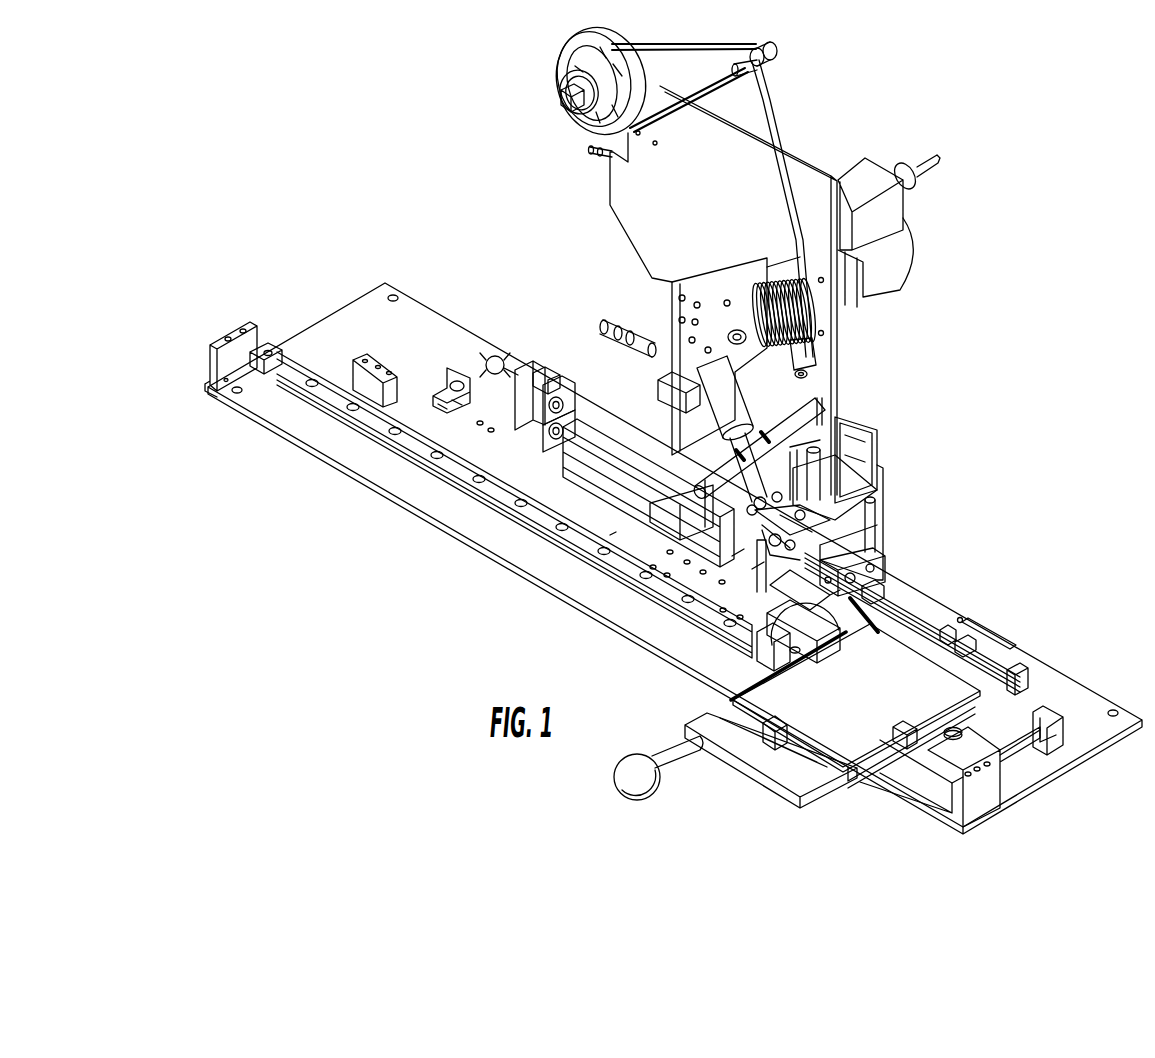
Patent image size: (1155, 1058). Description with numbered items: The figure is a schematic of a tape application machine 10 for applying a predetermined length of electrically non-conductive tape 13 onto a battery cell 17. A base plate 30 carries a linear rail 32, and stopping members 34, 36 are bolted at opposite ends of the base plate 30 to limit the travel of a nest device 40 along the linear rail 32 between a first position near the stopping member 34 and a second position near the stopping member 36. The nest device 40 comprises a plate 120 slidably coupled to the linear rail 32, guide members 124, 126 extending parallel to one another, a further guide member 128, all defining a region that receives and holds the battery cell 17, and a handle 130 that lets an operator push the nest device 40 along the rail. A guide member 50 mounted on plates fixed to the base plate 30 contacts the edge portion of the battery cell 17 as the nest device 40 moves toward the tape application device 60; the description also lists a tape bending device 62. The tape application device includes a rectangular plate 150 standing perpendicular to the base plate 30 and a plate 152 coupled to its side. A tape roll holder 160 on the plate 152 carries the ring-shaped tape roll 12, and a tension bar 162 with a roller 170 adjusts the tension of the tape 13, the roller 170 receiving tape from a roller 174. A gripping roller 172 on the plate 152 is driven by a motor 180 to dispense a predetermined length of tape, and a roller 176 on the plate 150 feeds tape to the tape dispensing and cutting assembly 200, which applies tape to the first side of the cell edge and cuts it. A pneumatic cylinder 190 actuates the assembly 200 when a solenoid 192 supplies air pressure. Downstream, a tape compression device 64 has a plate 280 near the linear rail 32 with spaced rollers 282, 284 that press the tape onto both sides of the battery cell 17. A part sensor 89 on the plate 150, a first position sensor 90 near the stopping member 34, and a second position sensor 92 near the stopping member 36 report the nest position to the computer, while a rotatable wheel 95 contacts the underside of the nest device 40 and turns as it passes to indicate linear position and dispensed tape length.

The tape application machine 10 is at (948, 143).
The tape roll 12 is at (582, 78).
The electrically non-conductive tape 13 is at (780, 118).
The battery cell 17 is at (846, 701).
The base plate 30 is at (1073, 677).
The linear rail 32 is at (592, 562).
The stopping member 34 is at (987, 794).
The stopping member 36 is at (215, 352).
The nest device 40 is at (270, 352).
The guide member 50 is at (1010, 678).
The tape application device 60 is at (815, 160).
The tape bending device 62 is at (610, 442).
The tape compression device 64 is at (552, 388).
The part sensor 89 is at (807, 478).
The first position sensor 90 is at (880, 567).
The second position sensor 92 is at (457, 373).
The rotatable wheel 95 is at (873, 593).
The plate 120 is at (930, 777).
The guide member 124 is at (903, 730).
The guide member 126 is at (773, 633).
The guide member 128 is at (723, 712).
The handle 130 is at (647, 793).
The plate 150 is at (680, 305).
The plate 152 is at (625, 214).
The tape roll holder 160 is at (572, 72).
The tension bar 162 is at (685, 50).
The roller 170 is at (760, 48).
The gripping roller 172 is at (775, 316).
The roller 174 is at (805, 374).
The roller 176 is at (795, 423).
The motor 180 is at (913, 254).
The pneumatic cylinder 190 is at (713, 413).
The solenoid 192 is at (667, 376).
The tape dispensing and cutting assembly 200 is at (830, 520).
The plate 280 is at (557, 405).
The roller 282 is at (547, 445).
The roller 284 is at (567, 407).